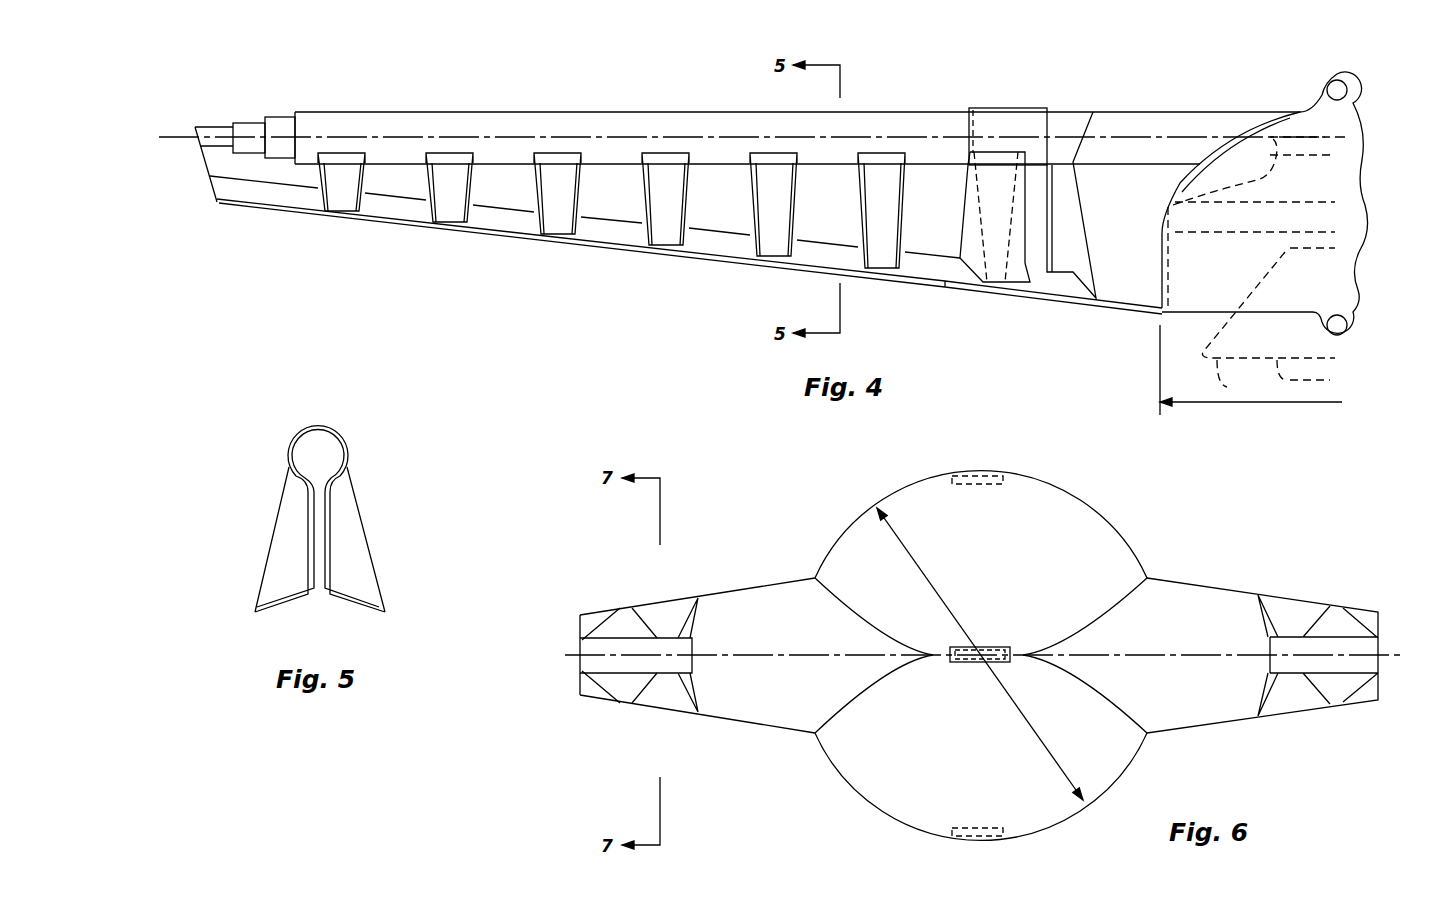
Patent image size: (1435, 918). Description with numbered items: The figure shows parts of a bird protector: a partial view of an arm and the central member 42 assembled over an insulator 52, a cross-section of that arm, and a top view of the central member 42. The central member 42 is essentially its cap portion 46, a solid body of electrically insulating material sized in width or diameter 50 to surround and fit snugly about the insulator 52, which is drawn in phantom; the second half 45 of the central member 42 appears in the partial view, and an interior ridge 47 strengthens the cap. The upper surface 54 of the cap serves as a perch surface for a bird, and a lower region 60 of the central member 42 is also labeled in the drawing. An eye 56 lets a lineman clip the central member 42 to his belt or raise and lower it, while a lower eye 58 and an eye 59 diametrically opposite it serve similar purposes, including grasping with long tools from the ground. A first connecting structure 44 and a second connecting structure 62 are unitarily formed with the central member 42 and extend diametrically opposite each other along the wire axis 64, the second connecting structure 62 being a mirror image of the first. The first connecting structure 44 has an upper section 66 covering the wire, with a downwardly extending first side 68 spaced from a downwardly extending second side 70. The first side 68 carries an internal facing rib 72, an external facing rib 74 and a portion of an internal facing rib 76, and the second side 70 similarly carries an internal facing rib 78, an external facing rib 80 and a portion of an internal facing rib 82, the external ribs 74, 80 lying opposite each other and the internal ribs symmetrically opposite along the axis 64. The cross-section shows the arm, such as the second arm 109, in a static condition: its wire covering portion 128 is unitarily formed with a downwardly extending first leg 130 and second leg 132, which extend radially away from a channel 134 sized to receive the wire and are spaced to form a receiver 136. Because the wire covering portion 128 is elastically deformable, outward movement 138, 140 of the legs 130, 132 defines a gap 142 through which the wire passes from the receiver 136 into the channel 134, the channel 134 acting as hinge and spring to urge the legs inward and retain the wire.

In FIG. 4, the central member 42 is at (1180, 312).
In FIG. 6, the central member 42 is at (1127, 511).
In FIG. 6, the first connecting structure 44 is at (723, 727).
In FIG. 4, the second half 45 is at (1217, 282).
In FIG. 4, the cap portion 46 is at (1281, 112).
In FIG. 4, the ridge 47 is at (1200, 165).
In FIG. 4, the width or diameter 50 is at (1217, 402).
In FIG. 6, the width or diameter 50 is at (912, 550).
In FIG. 4, the insulator 52 is at (1218, 365).
In FIG. 4, the upper surface 54 is at (1247, 130).
In FIG. 6, the upper surface 54 is at (1011, 583).
In FIG. 4, the eye 56 is at (1307, 95).
In FIG. 6, the eye 56 is at (978, 662).
In FIG. 6, the lower eye 58 is at (978, 825).
In FIG. 6, the eye 59 is at (1007, 483).
In FIG. 4, the lower shell half 60 is at (1282, 315).
In FIG. 6, the lower shell half 60 is at (845, 778).
In FIG. 4, the second connecting structure 62 is at (1143, 110).
In FIG. 6, the second connecting structure 62 is at (1200, 722).
In FIG. 4, the wire axis 64 is at (357, 132).
In FIG. 6, the wire axis 64 is at (1147, 653).
In FIG. 6, the upper section 66 is at (660, 648).
In FIG. 6, the downwardly extending first side 68 is at (785, 718).
In FIG. 6, the downwardly extending second side 70 is at (790, 590).
In FIG. 6, the internal facing rib 72 is at (672, 704).
In FIG. 6, the external facing rib 74 is at (618, 707).
In FIG. 6, the internal facing rib 76 is at (590, 697).
In FIG. 6, the internal facing rib 78 is at (685, 605).
In FIG. 6, the external facing rib 80 is at (620, 605).
In FIG. 6, the internal facing rib 82 is at (592, 612).
In FIG. 4, the second arm 109 is at (552, 112).
In FIG. 5, the wire covering portion 128 is at (338, 430).
In FIG. 5, the first leg 130 is at (312, 570).
In FIG. 5, the second leg 132 is at (328, 578).
In FIG. 5, the channel 134 is at (331, 455).
In FIG. 5, the receiver 136 is at (325, 575).
In FIG. 5, the outward movement 138 is at (388, 573).
In FIG. 5, the outward movement 140 is at (255, 573).
In FIG. 5, the gap 142 is at (320, 480).